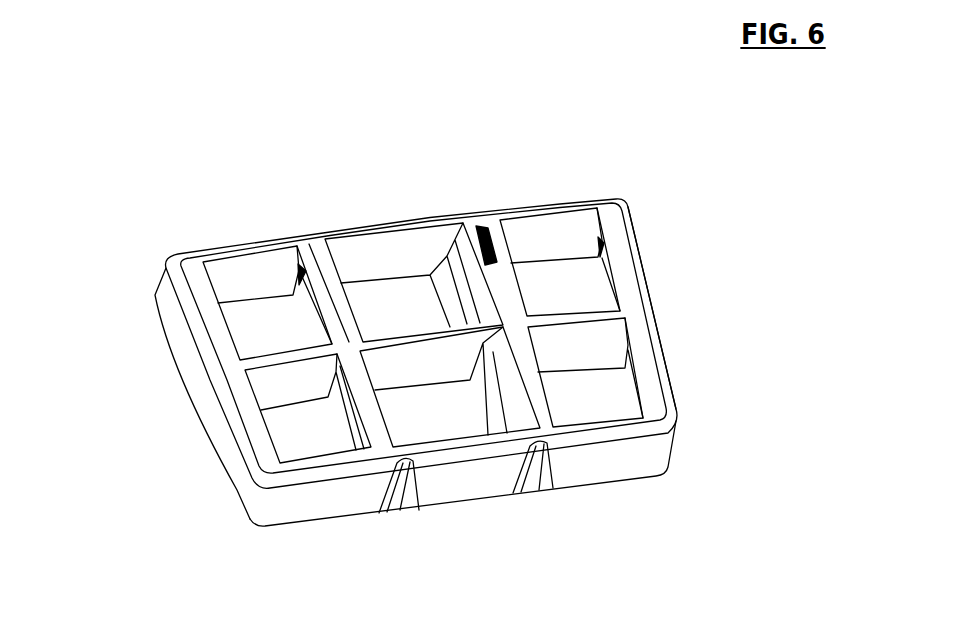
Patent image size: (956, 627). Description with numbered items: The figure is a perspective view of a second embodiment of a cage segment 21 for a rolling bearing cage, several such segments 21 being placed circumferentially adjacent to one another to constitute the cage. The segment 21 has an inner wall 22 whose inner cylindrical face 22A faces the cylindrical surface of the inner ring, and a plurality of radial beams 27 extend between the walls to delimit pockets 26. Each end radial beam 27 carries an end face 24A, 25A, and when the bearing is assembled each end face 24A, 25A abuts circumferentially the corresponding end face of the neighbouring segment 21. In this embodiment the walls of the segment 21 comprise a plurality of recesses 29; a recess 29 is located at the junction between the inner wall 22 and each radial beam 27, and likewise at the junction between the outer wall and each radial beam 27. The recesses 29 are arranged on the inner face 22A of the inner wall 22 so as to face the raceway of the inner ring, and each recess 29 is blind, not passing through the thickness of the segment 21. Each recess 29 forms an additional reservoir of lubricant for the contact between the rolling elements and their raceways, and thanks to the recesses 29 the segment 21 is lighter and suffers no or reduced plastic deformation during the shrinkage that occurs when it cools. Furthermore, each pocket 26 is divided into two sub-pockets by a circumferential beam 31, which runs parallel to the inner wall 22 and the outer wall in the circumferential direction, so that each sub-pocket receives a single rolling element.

The segment 21 is at (203, 142).
The inner wall 22 is at (503, 205).
The inner cylindrical face 22A is at (603, 467).
The end face 24A is at (190, 372).
The end face 25A is at (642, 258).
The pocket 26 is at (410, 285).
The radial beam 27 is at (193, 278).
The recess 29 is at (320, 236).
The circumferential beam 31 is at (292, 346).